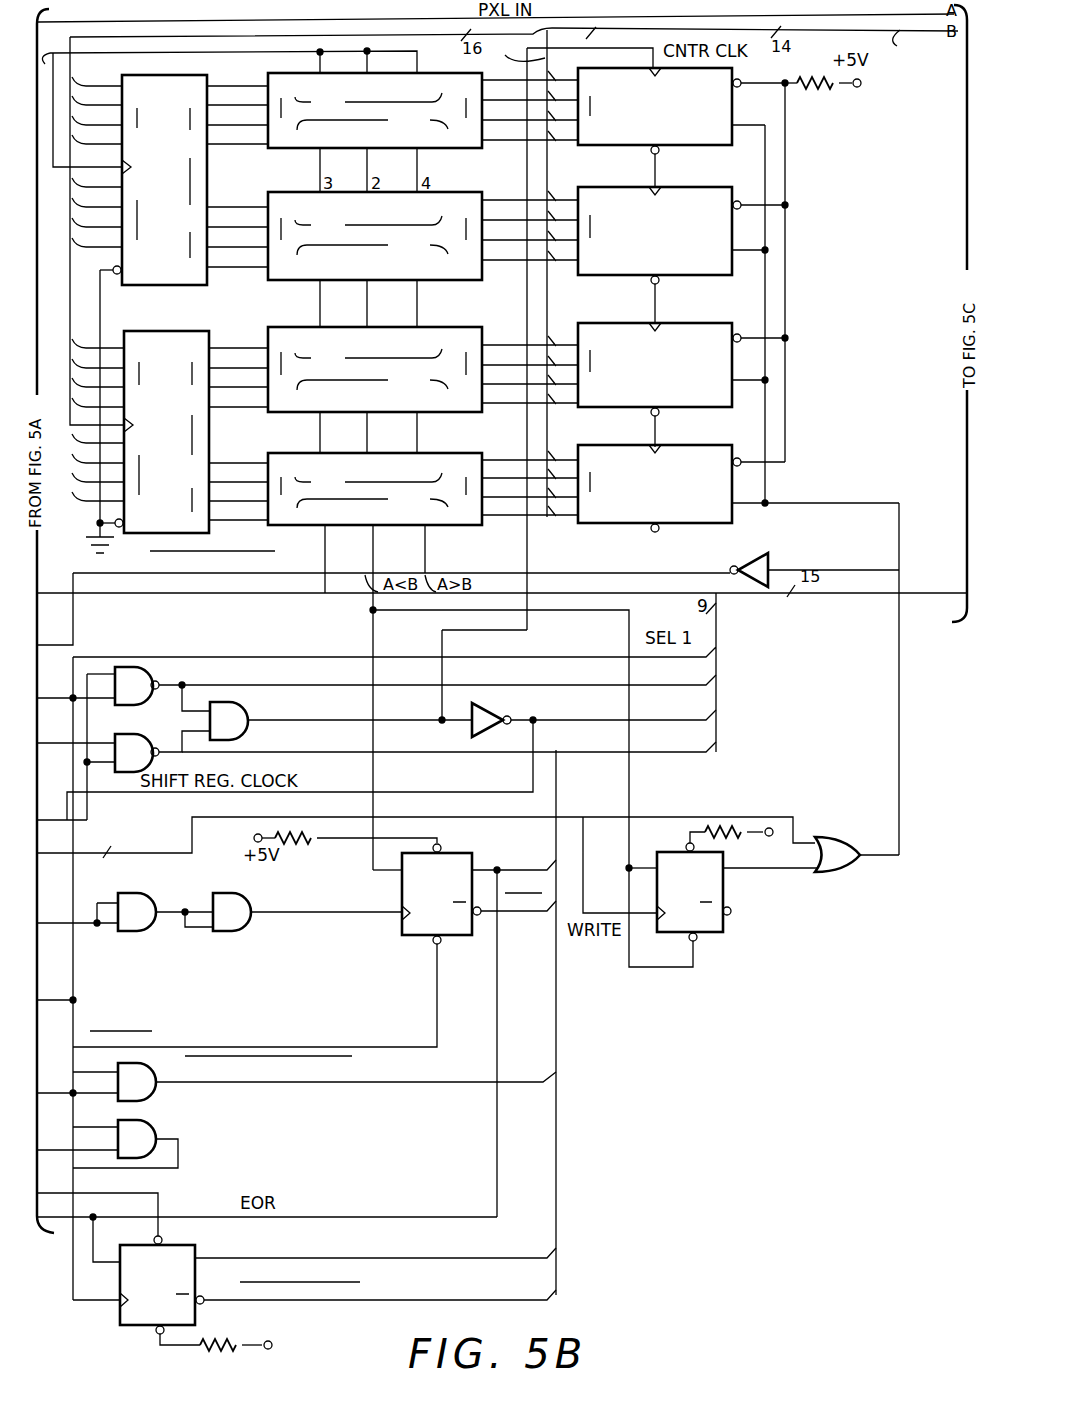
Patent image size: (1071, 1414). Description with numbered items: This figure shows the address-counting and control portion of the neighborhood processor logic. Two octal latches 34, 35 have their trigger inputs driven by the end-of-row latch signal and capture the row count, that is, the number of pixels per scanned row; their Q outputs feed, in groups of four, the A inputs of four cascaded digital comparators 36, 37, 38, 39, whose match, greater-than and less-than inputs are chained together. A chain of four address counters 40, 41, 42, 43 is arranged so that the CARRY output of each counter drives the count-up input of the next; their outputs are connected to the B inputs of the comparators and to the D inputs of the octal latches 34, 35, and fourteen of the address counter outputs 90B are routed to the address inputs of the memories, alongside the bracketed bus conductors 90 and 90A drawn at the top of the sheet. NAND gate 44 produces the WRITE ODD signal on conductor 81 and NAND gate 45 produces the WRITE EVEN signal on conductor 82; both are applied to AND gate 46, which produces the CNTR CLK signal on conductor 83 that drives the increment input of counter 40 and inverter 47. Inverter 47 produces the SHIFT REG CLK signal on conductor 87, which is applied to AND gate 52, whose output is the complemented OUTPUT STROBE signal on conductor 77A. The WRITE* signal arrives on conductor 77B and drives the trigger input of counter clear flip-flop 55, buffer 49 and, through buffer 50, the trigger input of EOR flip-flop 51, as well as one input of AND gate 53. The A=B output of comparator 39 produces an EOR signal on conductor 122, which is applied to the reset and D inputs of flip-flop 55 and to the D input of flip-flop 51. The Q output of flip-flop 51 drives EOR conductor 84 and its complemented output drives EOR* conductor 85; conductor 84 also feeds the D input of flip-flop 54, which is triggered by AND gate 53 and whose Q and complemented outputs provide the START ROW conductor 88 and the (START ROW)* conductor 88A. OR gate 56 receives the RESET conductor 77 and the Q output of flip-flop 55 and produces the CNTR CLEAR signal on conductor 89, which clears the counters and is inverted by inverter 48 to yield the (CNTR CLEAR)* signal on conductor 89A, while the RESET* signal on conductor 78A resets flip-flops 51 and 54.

The octal latch 34 is at (150, 290).
The octal latch 35 is at (150, 327).
The digital comparator 36 is at (288, 150).
The digital comparator 37 is at (288, 282).
The digital comparator 38 is at (288, 414).
The digital comparator 39 is at (300, 528).
The address counter 40 is at (625, 150).
The address counter 41 is at (625, 280).
The address counter 42 is at (625, 412).
The address counter 43 is at (625, 528).
The two-input NAND gate 44 is at (127, 705).
The two-input NAND gate 45 is at (125, 772).
The two-input AND gate 46 is at (247, 738).
The inverter 47 is at (470, 737).
The inverter 48 is at (738, 561).
The buffer 49 is at (148, 898).
The buffer 50 is at (245, 898).
The EOR flip-flop 51 is at (402, 940).
The two-input AND gate 52 is at (152, 1100).
The two-input AND gate 53 is at (160, 1125).
The flip-flop 54 is at (118, 1323).
The counter clear flip-flop 55 is at (730, 928).
The two-input OR gate 56 is at (836, 875).
The RESET conductor 77 is at (762, 817).
The (OUTPUT STROBE)* conductor 77A is at (437, 1083).
The WRITE* conductor 77B is at (487, 817).
The RESET* conductor 78A is at (345, 1046).
The WRITE ODD conductor 81 is at (320, 686).
The WRITE EVEN conductor 82 is at (318, 752).
The CNTR CLK conductor 83 is at (312, 733).
The EOR conductor 84 is at (547, 857).
The EOR* conductor 85 is at (545, 918).
The SHIFT REG CLK conductor 87 is at (538, 723).
The START ROW conductor 88 is at (398, 1256).
The (START ROW)* conductor 88A is at (398, 1299).
The CNTR CLEAR conductor 89 is at (899, 816).
The (CNTR CLEAR)* conductor 89A is at (457, 572).
The pixel input bus 90 is at (573, 330).
The bus from FIG. 5A 90A is at (53, 621).
The address counter outputs 90B is at (930, 313).
The EOR conductor 122 is at (325, 590).